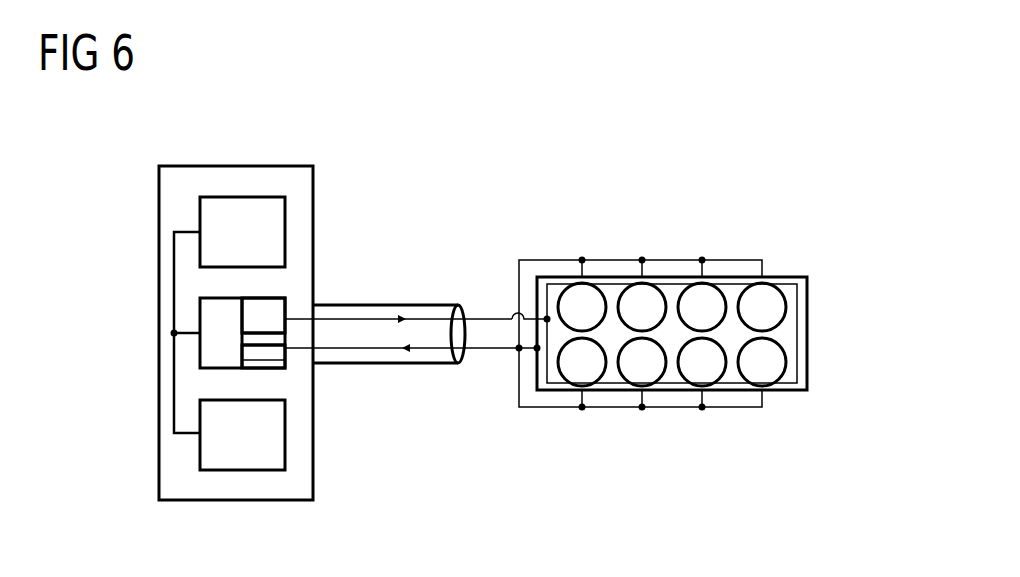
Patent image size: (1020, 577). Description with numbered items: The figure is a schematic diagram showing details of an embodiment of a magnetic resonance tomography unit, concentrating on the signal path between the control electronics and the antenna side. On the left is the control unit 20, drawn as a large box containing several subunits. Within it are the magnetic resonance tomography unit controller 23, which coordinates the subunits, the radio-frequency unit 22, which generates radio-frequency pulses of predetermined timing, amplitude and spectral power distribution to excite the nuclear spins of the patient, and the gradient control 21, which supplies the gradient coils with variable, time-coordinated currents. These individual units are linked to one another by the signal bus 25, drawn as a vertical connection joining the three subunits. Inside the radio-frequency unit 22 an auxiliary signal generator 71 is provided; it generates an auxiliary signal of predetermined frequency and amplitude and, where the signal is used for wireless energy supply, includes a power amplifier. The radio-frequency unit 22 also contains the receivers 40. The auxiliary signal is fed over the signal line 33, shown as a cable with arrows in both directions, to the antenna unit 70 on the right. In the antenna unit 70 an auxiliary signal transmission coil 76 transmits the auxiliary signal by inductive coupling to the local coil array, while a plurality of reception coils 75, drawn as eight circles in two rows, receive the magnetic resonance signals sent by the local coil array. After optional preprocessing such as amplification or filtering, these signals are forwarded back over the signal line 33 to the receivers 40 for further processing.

The control unit 20 is at (232, 166).
The gradient control 21 is at (205, 454).
The radio-frequency unit 22 is at (205, 314).
The magnetic resonance tomography unit controller 23 is at (205, 212).
The signal bus 25 is at (173, 386).
The signal line 33 is at (385, 305).
The receivers 40 is at (263, 352).
The antenna unit 70 is at (789, 275).
The auxiliary signal generator 71 is at (268, 316).
The reception coils 75 is at (571, 305).
The auxiliary signal transmission coil 76 is at (807, 332).